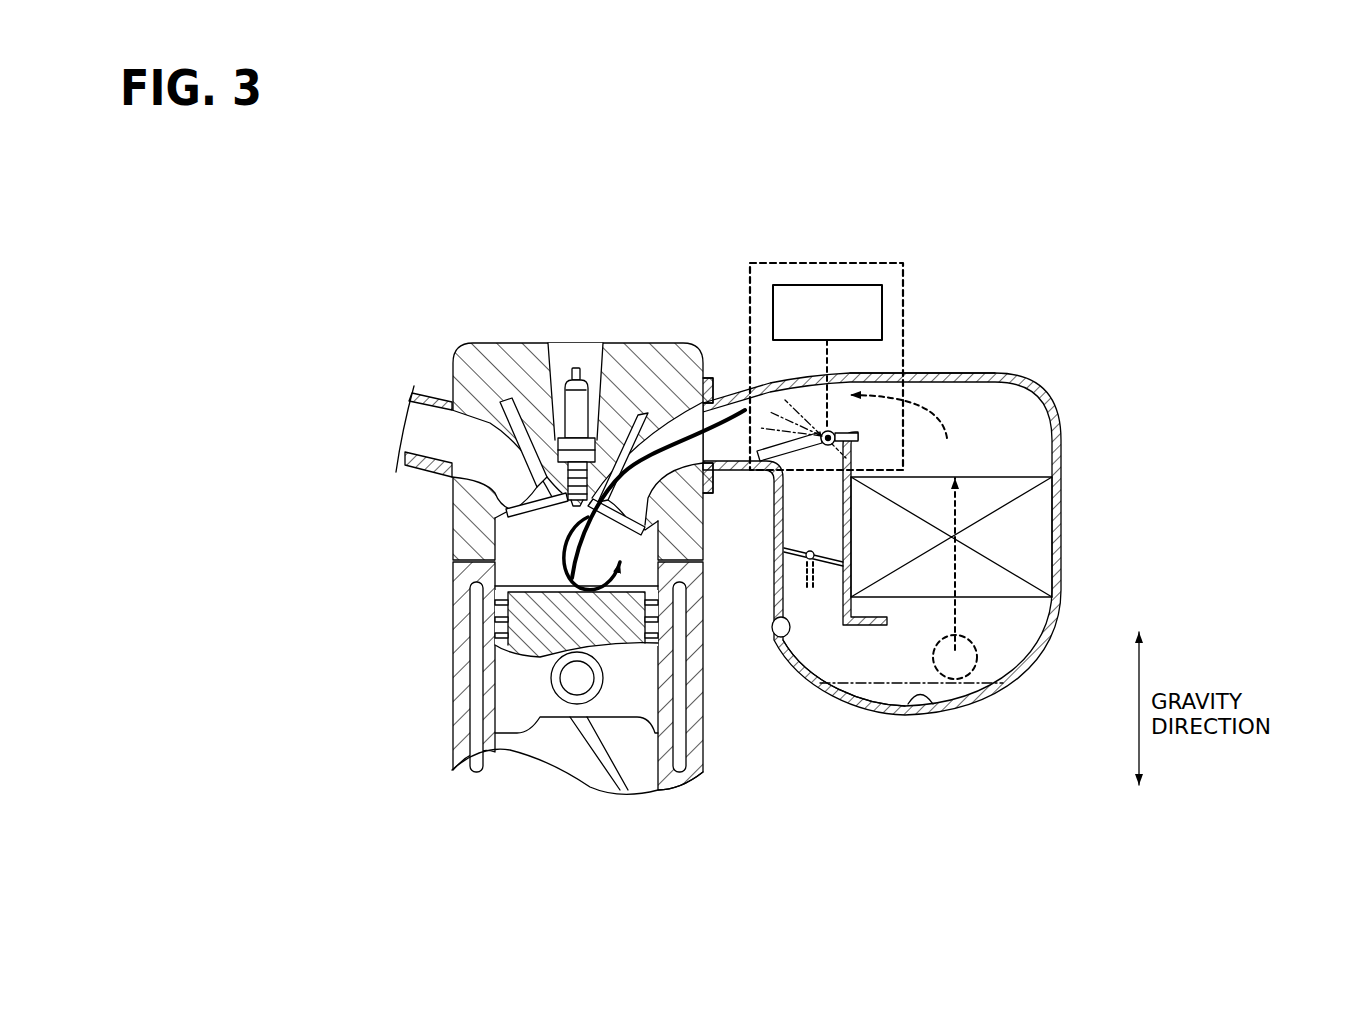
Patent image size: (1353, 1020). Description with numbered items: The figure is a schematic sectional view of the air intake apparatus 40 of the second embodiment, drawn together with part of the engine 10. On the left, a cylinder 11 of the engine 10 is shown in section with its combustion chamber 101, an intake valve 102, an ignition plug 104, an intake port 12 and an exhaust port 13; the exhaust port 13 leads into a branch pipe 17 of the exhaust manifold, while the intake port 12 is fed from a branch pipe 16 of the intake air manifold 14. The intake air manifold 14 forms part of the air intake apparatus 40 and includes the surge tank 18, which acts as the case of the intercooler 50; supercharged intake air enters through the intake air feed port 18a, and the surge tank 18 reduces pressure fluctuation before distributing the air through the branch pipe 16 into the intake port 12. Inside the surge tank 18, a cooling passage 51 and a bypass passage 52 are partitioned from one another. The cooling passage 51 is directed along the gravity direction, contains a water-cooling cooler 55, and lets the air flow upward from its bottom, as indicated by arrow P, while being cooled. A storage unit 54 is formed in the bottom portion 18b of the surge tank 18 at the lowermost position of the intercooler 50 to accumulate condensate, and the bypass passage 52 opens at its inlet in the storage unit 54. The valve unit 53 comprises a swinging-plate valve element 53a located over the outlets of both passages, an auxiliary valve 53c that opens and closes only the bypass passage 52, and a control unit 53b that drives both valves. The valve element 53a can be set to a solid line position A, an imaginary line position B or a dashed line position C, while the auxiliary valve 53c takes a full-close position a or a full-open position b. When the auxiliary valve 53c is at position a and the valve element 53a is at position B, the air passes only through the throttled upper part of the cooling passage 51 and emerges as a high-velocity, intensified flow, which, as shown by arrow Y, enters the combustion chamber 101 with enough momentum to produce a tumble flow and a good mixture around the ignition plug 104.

The engine 10 is at (567, 493).
The cylinder 11 is at (453, 673).
The intake port 12 is at (675, 430).
The exhaust port 13 is at (487, 441).
The intake air manifold 14 is at (977, 372).
The branch pipe 16 is at (732, 465).
The branch pipe 17 is at (430, 470).
The surge tank 18 is at (1057, 615).
The intake air feed port 18a is at (980, 664).
The bottom portion 18b is at (932, 700).
The air intake apparatus 40 is at (845, 712).
The intercooler 50 is at (913, 488).
The cooling passage 51 is at (1035, 470).
The bypass passage 52 is at (780, 637).
The valve unit 53 is at (868, 425).
The valve element 53a is at (805, 445).
The control unit 53b is at (873, 312).
The auxiliary valve 53c is at (830, 567).
The storage unit 54 is at (915, 706).
The water-cooling cooler 55 is at (1010, 530).
The combustion chamber 101 is at (533, 538).
The intake valve 102 is at (603, 432).
The ignition plug 104 is at (568, 395).
The solid line position A is at (775, 453).
The imaginary line position B is at (758, 420).
The dashed line position C is at (782, 403).
The arrow P is at (907, 522).
The solid line arrow Y is at (565, 560).
The solid line position a is at (805, 557).
The dashed line position b is at (807, 580).